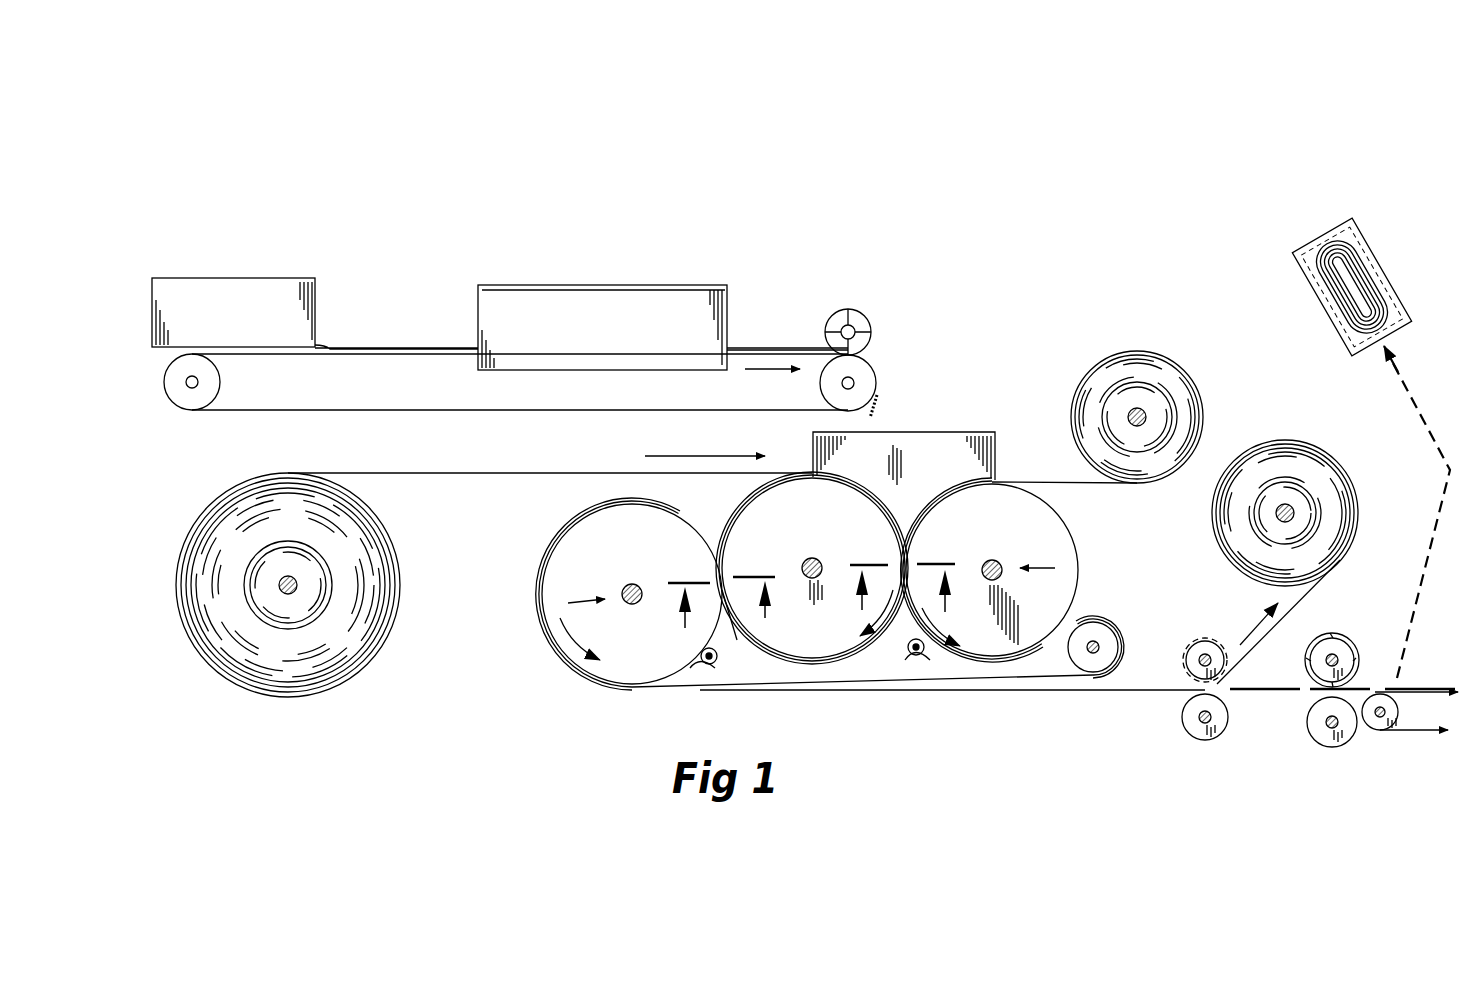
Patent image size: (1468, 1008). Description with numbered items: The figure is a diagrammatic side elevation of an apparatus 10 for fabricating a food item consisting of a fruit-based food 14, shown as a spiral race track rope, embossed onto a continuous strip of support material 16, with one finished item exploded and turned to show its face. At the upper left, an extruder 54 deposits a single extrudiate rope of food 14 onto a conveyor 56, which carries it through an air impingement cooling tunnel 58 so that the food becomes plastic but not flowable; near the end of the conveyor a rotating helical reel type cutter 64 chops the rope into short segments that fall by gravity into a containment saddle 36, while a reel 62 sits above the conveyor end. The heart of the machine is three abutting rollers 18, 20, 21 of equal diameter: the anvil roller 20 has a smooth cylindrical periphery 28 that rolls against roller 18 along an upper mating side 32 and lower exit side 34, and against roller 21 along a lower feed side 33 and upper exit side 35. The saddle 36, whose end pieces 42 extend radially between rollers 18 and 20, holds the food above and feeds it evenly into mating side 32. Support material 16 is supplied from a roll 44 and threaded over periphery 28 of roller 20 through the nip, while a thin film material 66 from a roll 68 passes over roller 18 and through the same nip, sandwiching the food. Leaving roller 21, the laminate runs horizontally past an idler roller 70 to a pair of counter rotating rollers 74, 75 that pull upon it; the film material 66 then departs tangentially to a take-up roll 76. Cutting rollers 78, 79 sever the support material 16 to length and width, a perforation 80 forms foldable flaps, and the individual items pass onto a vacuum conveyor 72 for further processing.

The apparatus 10 is at (1016, 140).
The food 14 is at (366, 350).
The support material 16 is at (478, 480).
The roller 18 is at (1014, 532).
The anvil roller 20 is at (830, 530).
The roller 21 is at (634, 560).
The cylindrical periphery 28 is at (760, 500).
The upper mating side 32 is at (906, 530).
The lower feed side 33 is at (724, 663).
The lower exit side 34 is at (897, 646).
The upper exit side 35 is at (722, 548).
The containment saddle 36 is at (907, 432).
The end pieces 42 is at (942, 464).
The roll 44 is at (400, 601).
The extruder 54 is at (230, 278).
The conveyor 56 is at (399, 411).
The air impingement cooling tunnel 58 is at (597, 285).
The guide wheel 62 is at (863, 318).
The helical reel type cutter 64 is at (830, 409).
The thin film material 66 is at (1080, 483).
The roll 68 is at (1100, 355).
The idler roller 70 is at (1108, 632).
The vacuum conveyor 72 is at (1418, 732).
The roller 74 is at (1200, 638).
The roller 75 is at (1192, 737).
The take-up roll 76 is at (1262, 442).
The cutting roller 78 is at (1347, 640).
The cutting roller 79 is at (1326, 748).
The perforation 80 is at (1365, 240).